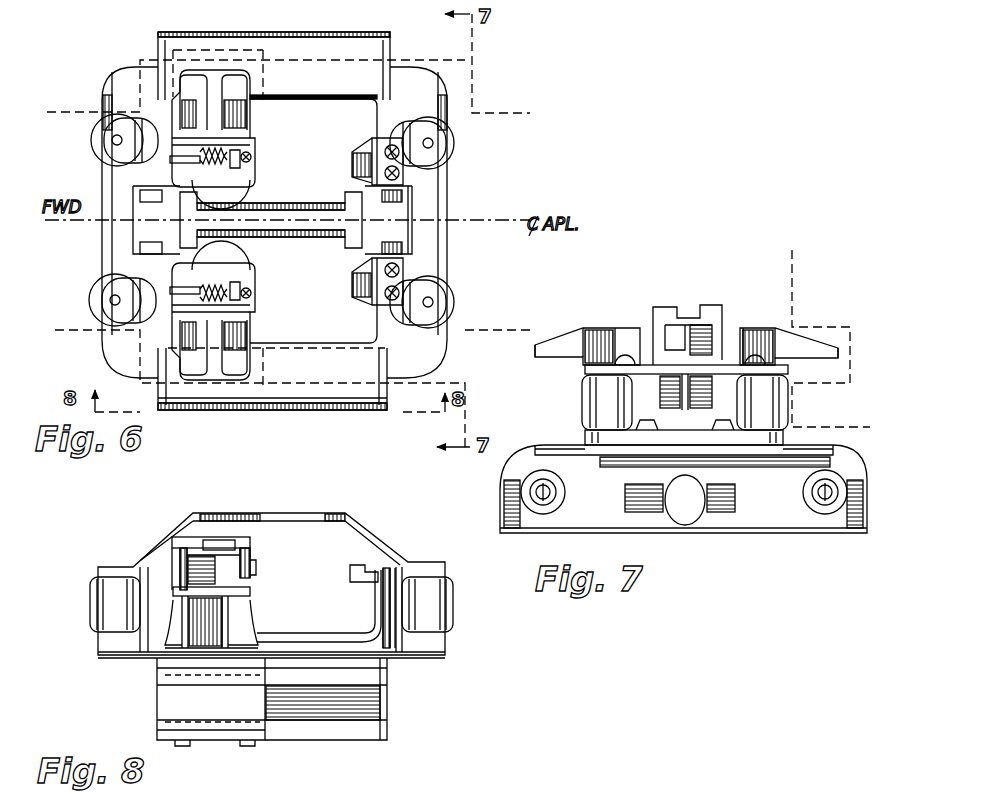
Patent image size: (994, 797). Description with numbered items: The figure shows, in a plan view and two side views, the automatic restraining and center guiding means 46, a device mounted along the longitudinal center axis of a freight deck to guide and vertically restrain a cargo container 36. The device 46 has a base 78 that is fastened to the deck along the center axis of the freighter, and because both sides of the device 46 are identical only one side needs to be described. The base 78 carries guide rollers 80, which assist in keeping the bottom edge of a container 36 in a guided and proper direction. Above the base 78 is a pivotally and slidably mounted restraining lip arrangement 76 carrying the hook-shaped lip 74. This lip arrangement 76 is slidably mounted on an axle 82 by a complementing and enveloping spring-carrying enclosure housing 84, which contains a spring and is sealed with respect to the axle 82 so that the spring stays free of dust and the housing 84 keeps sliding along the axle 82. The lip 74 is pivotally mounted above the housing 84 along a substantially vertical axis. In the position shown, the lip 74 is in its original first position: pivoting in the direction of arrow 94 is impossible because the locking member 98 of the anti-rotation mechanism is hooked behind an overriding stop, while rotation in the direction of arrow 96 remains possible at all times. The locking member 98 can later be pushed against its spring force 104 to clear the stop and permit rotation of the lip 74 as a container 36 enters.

In FIG. 7, the container 36 is at (790, 251).
In FIG. 6, the automatic restraining and center guiding means 46 is at (453, 190).
In FIG. 6, the lip 74 is at (256, 124).
In FIG. 7, the lip 74 is at (560, 357).
In FIG. 8, the lip 74 is at (246, 555).
In FIG. 6, the restraining lip arrangement 76 is at (257, 291).
In FIG. 8, the restraining lip arrangement 76 is at (248, 602).
In FIG. 6, the base 78 is at (448, 240).
In FIG. 7, the base 78 is at (720, 358).
In FIG. 6, the guide rollers 80 is at (94, 135).
In FIG. 7, the guide rollers 80 is at (598, 400).
In FIG. 8, the guide rollers 80 is at (95, 606).
In FIG. 7, the axle 82 is at (538, 512).
In FIG. 8, the axle 82 is at (318, 722).
In FIG. 6, the spring-carrying enclosure housing 84 is at (253, 397).
In FIG. 8, the spring-carrying enclosure housing 84 is at (214, 709).
In FIG. 6, the arrow 94 is at (250, 358).
In FIG. 6, the arrow 96 is at (172, 348).
In FIG. 6, the locking member 98 is at (172, 286).
In FIG. 6, the spring force 104 is at (248, 183).